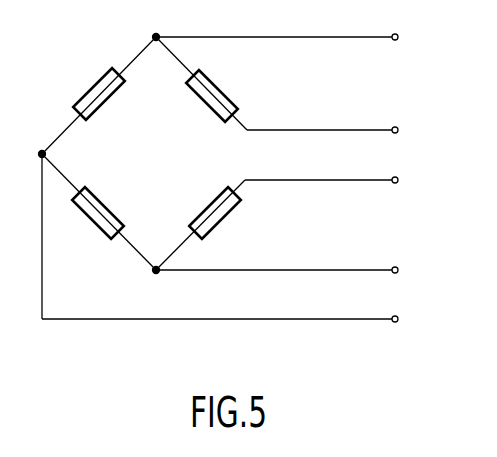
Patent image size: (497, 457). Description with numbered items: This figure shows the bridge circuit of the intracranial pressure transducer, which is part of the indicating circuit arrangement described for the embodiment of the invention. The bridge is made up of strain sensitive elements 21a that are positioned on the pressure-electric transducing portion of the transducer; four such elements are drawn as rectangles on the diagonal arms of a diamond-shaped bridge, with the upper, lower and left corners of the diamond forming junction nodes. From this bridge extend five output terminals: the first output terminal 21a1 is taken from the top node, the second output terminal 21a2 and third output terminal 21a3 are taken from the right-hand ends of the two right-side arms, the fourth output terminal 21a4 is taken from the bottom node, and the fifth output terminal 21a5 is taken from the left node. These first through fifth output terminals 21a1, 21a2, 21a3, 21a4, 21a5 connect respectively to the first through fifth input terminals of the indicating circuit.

The strain sensitive elements 21a is at (103, 93).
The first output terminal 21a1 is at (398, 37).
The second output terminal 21a2 is at (398, 130).
The third output terminal 21a3 is at (398, 180).
The fourth output terminal 21a4 is at (398, 270).
The fifth output terminal 21a5 is at (398, 319).